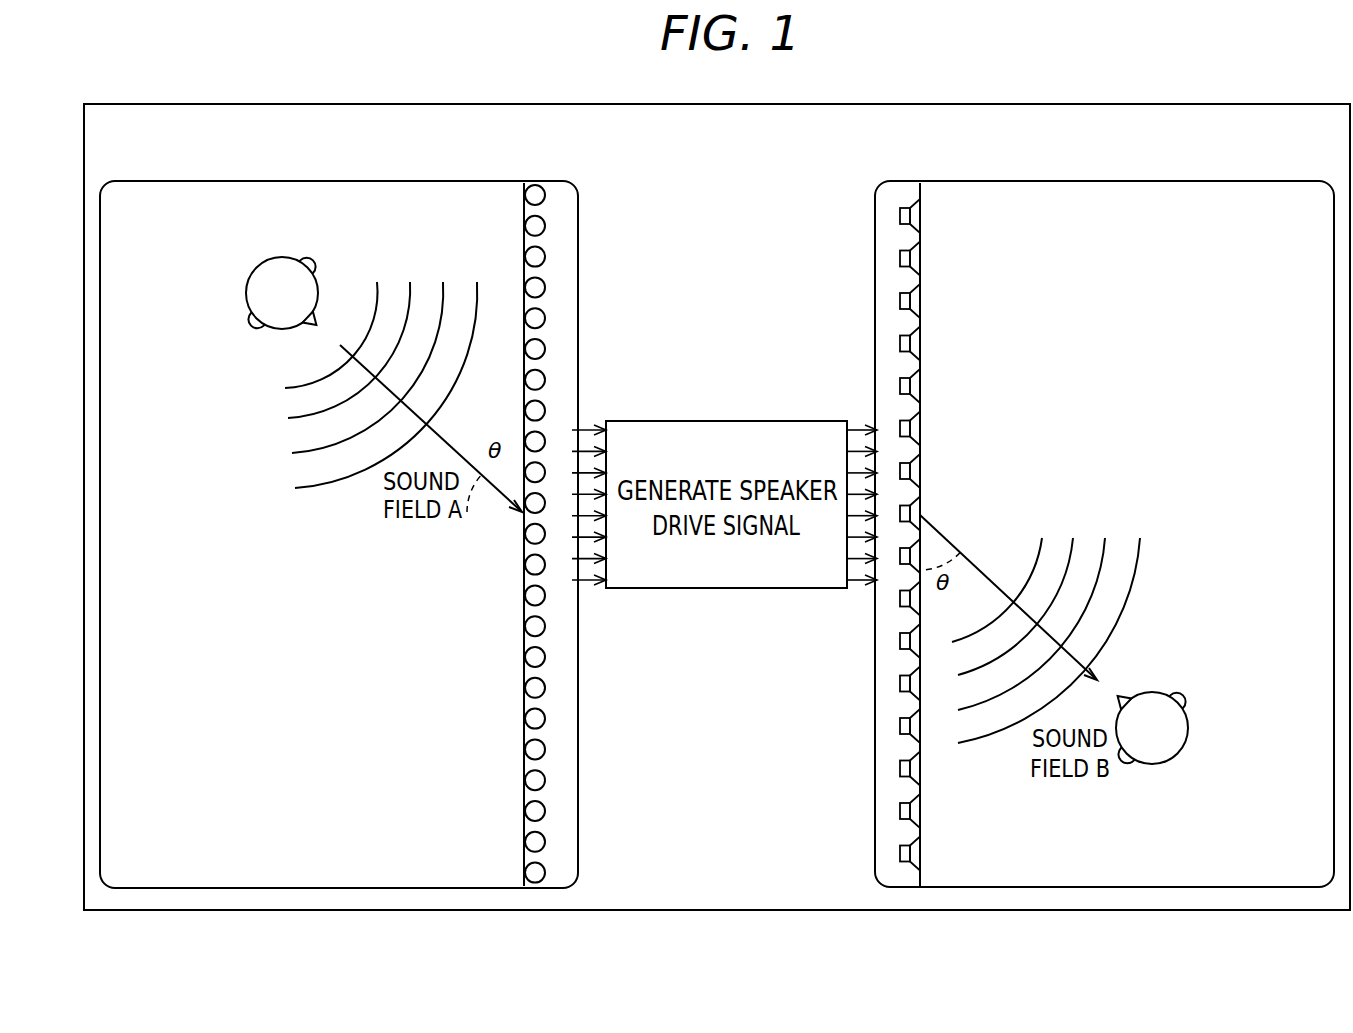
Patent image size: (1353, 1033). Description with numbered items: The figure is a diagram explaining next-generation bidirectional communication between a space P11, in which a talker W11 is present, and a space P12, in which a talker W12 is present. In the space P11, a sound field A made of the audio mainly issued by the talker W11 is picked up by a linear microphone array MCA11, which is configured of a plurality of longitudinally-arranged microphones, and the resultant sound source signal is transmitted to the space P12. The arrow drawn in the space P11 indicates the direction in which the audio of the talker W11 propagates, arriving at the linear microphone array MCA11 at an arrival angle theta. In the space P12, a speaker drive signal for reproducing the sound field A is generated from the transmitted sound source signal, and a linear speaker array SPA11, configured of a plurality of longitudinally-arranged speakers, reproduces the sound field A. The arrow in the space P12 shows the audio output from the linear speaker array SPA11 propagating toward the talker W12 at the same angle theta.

The space P11 is at (345, 181).
The space P12 is at (1105, 181).
The talker W11 is at (250, 284).
The talker W12 is at (1184, 745).
The linear microphone array MCA11 is at (545, 253).
The linear speaker array SPA11 is at (900, 258).